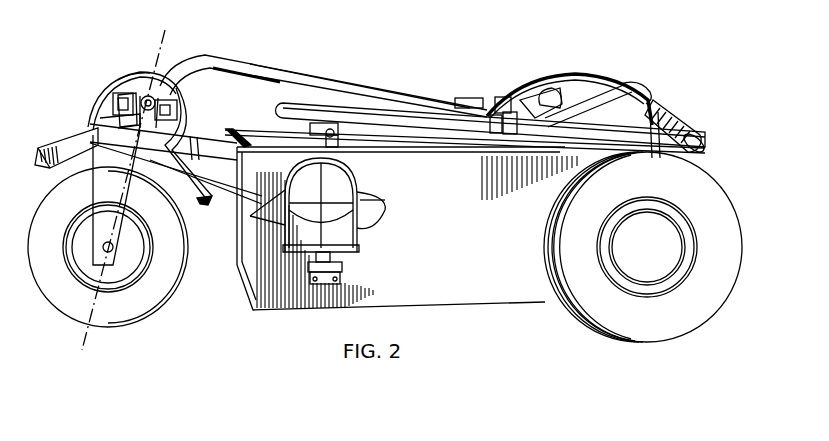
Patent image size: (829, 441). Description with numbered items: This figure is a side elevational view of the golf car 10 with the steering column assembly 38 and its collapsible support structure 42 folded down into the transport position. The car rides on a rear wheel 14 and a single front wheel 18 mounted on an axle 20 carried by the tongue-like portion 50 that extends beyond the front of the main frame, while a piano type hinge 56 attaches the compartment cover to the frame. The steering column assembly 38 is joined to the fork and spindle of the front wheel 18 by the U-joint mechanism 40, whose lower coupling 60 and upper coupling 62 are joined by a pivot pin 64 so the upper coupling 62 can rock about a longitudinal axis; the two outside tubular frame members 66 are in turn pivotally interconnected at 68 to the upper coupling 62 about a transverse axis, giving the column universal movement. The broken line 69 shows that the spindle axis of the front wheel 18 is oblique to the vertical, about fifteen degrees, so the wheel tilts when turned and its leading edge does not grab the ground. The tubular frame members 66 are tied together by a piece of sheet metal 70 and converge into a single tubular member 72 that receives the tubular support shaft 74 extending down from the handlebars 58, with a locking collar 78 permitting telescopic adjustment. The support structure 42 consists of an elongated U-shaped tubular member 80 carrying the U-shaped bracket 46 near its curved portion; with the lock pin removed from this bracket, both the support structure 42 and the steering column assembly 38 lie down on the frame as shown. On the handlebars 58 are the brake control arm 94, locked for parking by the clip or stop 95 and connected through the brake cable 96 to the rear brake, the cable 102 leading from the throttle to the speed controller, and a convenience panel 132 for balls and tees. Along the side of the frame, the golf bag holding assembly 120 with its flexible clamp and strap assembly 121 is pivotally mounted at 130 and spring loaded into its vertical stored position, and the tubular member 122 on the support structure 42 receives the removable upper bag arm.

The golf car 10 is at (453, 48).
The rear wheel 14 is at (697, 182).
The front wheel 18 is at (63, 297).
The axle 20 is at (103, 247).
The steering column assembly 38 is at (306, 73).
The U-joint mechanism 40 is at (111, 86).
The collapsible support structure 42 is at (388, 106).
The U-shaped bracket 46 is at (497, 134).
The tongue-like portion 50 is at (97, 124).
The piano type hinge 56 is at (243, 128).
The handlebars 58 is at (637, 84).
The lower coupling 60 is at (115, 115).
The upper coupling 62 is at (124, 84).
The pivot pin 64 is at (113, 100).
The tubular frame members 66 is at (241, 62).
The pivotal interconnection 68 is at (153, 98).
The broken line 69 is at (148, 96).
The sheet metal 70 is at (344, 84).
The single tubular member 72 is at (472, 98).
The tubular support shaft 74 is at (440, 97).
The locking collar 78 is at (509, 134).
The U-shaped tubular member 80 is at (451, 135).
The brake control arm 94 is at (632, 148).
The clip or stop 95 is at (646, 98).
The brake cable 96 is at (593, 74).
The cable 102 is at (522, 92).
The golf bag holding assembly 120 is at (356, 171).
The flexible clamp and strap assembly 121 is at (385, 218).
The tubular member 122 is at (322, 129).
The pivot mounting 130 is at (340, 278).
The convenience panel 132 is at (550, 96).